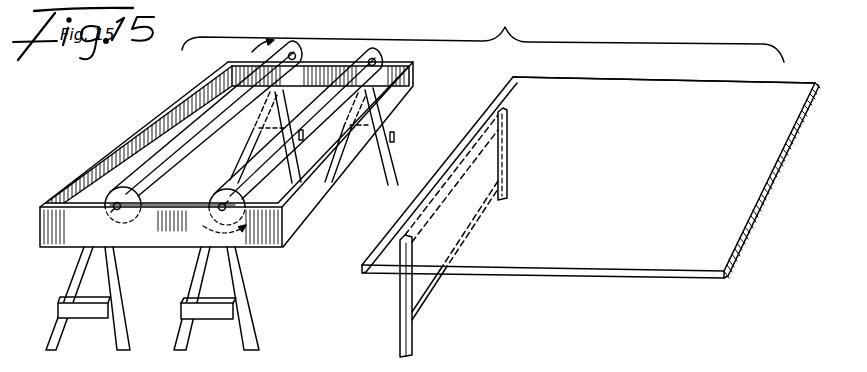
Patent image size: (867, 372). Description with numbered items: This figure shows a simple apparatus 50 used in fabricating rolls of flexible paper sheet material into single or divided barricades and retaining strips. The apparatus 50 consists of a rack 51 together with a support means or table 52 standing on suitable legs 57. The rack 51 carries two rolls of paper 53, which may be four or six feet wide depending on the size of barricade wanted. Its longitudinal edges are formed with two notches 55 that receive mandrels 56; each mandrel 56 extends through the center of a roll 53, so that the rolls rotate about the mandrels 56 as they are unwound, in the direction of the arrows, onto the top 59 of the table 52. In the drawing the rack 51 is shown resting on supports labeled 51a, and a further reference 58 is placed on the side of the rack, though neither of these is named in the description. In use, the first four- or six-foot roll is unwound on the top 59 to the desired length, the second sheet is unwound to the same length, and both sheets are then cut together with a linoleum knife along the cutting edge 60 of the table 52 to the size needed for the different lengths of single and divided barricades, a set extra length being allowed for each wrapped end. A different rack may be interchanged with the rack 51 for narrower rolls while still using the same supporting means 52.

The apparatus 50 is at (584, 203).
The rack 51 is at (316, 222).
The sawhorse supports 51a is at (187, 302).
The support means or table 52 is at (511, 284).
The rolls of paper 53 is at (225, 184).
The notches 55 is at (221, 209).
The mandrels 56 is at (262, 261).
The legs 57 is at (410, 323).
The side wall 58 is at (115, 148).
The top 59 is at (657, 97).
The cutting edge 60 is at (384, 240).